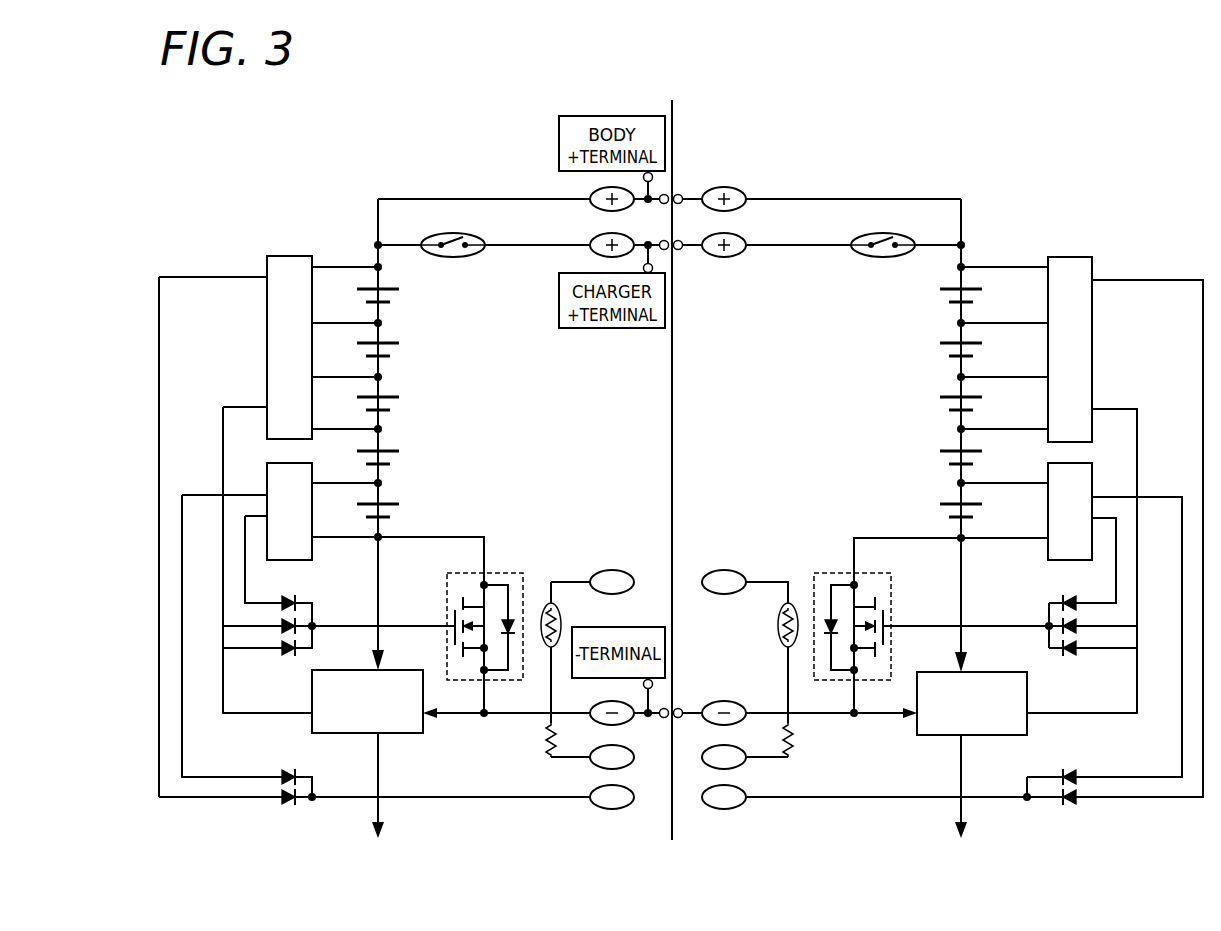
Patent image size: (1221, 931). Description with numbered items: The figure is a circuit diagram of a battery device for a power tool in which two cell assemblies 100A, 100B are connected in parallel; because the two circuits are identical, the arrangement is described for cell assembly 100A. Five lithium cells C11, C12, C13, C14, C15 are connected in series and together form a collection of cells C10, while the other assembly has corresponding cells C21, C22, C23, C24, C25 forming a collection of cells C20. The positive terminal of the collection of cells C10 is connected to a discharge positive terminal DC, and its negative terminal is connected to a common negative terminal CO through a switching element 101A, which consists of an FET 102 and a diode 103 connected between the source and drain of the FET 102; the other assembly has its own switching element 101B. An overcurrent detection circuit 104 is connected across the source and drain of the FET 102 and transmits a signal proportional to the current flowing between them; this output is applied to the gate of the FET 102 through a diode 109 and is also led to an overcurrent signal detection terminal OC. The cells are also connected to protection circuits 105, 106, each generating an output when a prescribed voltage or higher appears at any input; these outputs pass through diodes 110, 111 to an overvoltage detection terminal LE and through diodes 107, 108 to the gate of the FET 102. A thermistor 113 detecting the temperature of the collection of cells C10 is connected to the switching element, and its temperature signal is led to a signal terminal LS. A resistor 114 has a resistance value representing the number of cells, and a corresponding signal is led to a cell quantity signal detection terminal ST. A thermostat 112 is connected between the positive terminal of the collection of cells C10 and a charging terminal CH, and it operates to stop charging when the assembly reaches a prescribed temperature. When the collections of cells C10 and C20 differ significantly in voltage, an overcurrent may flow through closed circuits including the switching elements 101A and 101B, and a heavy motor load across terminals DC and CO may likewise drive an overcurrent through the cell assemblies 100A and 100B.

The cell assembly 100A is at (455, 85).
The cell assembly 100B is at (992, 85).
The switching element 101A is at (500, 572).
The switching element 101B is at (826, 572).
The FET 102 is at (447, 612).
The diode 103 is at (511, 660).
The overcurrent detection circuit 104 is at (399, 733).
The protection circuit 105 is at (292, 256).
The protection circuit 106 is at (305, 553).
The diode 107 is at (297, 626).
The diode 108 is at (297, 603).
The diode 109 is at (288, 654).
The diode 110 is at (283, 805).
The diode 111 is at (285, 771).
The thermostat 112 is at (437, 238).
The thermistor 113 is at (561, 612).
The resistor 114 is at (545, 739).
The collection of cells C10 is at (515, 410).
The collection of cells C20 is at (822, 410).
The lithium cell C11 is at (392, 297).
The lithium cell C12 is at (392, 351).
The lithium cell C13 is at (392, 405).
The lithium cell C14 is at (392, 459).
The lithium cell C15 is at (392, 512).
The lithium cell C21 is at (945, 297).
The lithium cell C22 is at (945, 351).
The lithium cell C23 is at (945, 405).
The lithium cell C24 is at (945, 459).
The lithium cell C25 is at (946, 512).
The discharge positive terminal DC is at (592, 196).
The charging terminal CH is at (592, 251).
The signal terminal LS is at (626, 574).
The common negative terminal CO is at (612, 727).
The cell quantity signal detection terminal ST is at (596, 766).
The overvoltage detection terminal LE is at (596, 806).
The overcurrent signal detection terminal OC is at (382, 840).